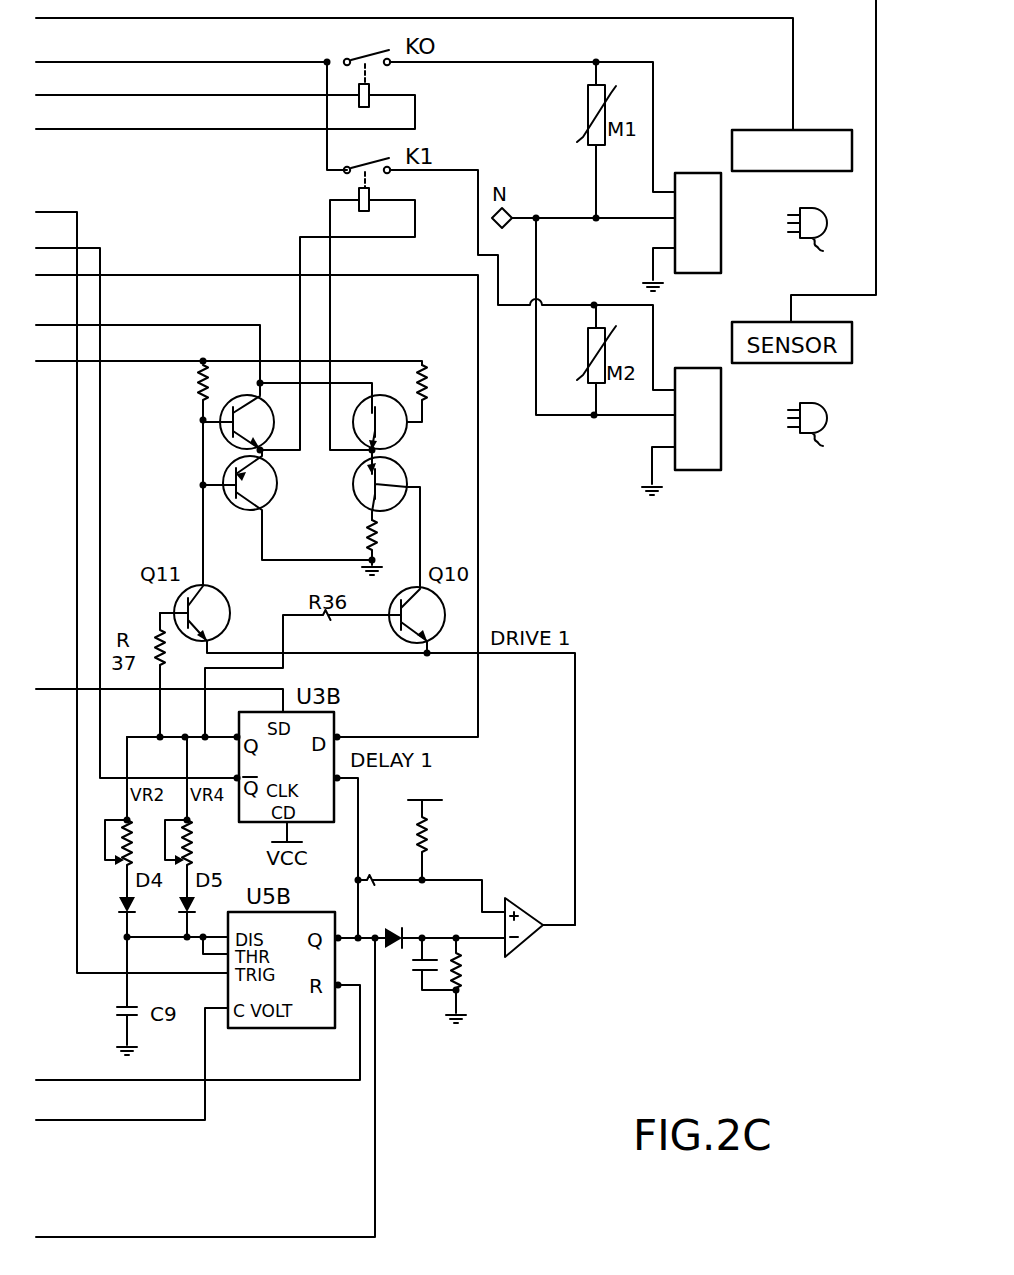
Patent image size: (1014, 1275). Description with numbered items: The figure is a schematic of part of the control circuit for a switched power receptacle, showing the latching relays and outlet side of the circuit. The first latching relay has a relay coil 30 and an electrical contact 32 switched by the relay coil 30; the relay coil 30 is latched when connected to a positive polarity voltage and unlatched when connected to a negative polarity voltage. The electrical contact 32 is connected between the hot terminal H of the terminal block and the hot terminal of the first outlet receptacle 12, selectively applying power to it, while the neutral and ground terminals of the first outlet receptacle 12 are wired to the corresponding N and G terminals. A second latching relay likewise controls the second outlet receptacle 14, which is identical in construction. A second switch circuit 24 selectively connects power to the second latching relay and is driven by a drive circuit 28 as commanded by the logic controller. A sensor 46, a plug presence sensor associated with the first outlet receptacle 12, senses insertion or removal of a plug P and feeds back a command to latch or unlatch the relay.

The first outlet receptacle 12 is at (724, 216).
The second outlet receptacle 14 is at (724, 410).
The second switch circuit 24 is at (192, 403).
The drive circuit 28 is at (505, 795).
The relay coil 30 is at (371, 85).
The electrical contact 32 is at (376, 57).
The sensor 46 is at (752, 128).